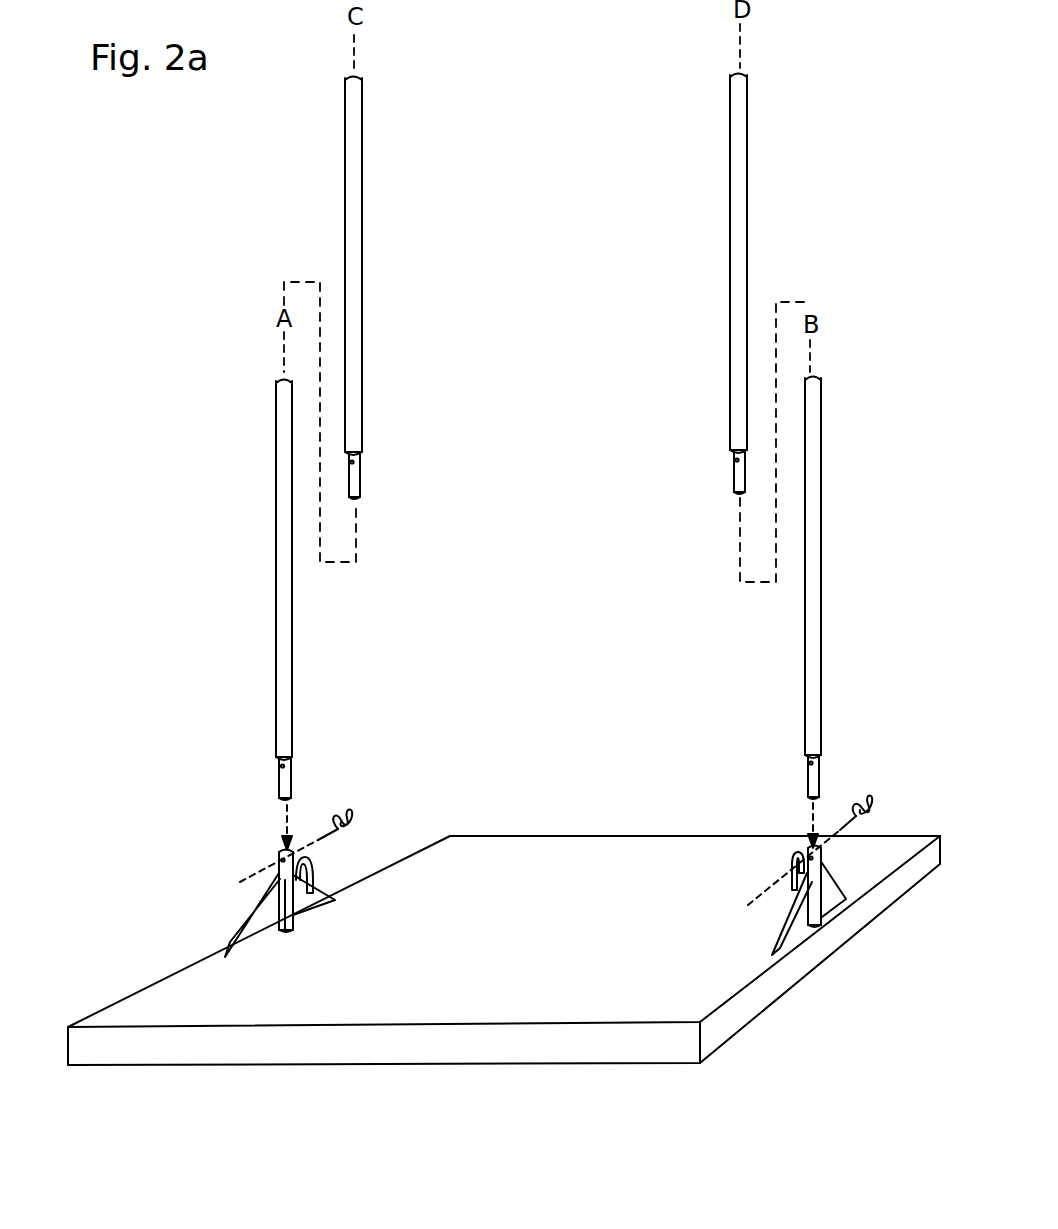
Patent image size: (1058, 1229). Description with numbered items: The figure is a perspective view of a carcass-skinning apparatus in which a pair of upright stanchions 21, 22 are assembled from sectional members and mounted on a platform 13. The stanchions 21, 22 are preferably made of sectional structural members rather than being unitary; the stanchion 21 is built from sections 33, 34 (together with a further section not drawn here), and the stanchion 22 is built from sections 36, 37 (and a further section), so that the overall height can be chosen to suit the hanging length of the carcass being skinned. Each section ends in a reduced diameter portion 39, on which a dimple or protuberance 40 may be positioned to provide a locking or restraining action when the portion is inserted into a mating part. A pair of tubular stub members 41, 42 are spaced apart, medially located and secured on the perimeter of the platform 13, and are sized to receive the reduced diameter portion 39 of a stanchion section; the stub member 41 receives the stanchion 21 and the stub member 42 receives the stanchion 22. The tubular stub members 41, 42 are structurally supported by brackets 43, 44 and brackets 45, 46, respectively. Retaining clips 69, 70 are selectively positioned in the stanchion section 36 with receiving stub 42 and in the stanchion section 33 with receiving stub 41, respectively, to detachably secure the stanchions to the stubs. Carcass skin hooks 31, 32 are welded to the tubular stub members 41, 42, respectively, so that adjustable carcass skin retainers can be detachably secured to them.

The platform 13 is at (532, 838).
The stanchion 21 is at (800, 230).
The stanchion 22 is at (236, 357).
The carcass skin hook 31 is at (308, 893).
The carcass skin hook 32 is at (815, 902).
The stanchion section 33 is at (802, 588).
The stanchion section 34 is at (730, 238).
The stanchion section 36 is at (292, 672).
The stanchion section 37 is at (362, 246).
The reduced diameter portion 39 is at (820, 777).
The dimple or protuberance 40 is at (808, 763).
The tubular stub member 41 is at (823, 860).
The tubular stub member 42 is at (294, 918).
The bracket 43 is at (848, 890).
The bracket 44 is at (782, 956).
The bracket 45 is at (328, 885).
The bracket 46 is at (242, 920).
The retaining clip 69 is at (348, 817).
The retaining clip 70 is at (872, 794).